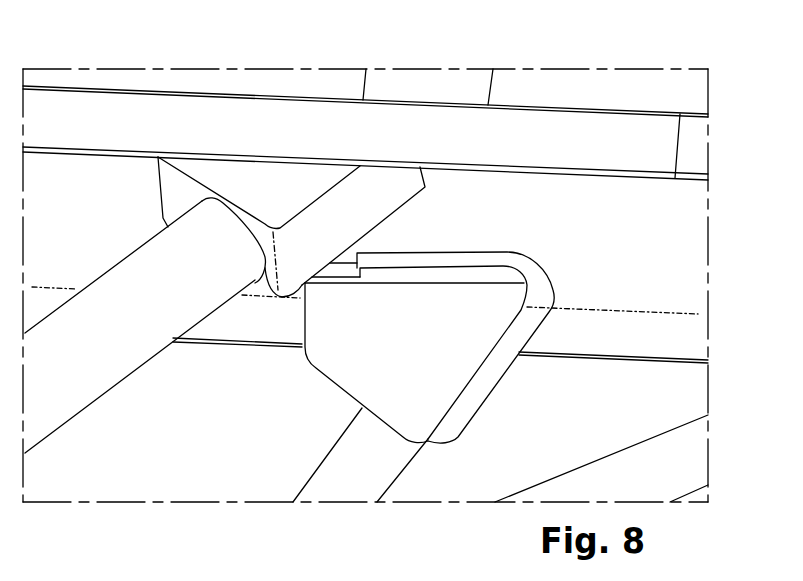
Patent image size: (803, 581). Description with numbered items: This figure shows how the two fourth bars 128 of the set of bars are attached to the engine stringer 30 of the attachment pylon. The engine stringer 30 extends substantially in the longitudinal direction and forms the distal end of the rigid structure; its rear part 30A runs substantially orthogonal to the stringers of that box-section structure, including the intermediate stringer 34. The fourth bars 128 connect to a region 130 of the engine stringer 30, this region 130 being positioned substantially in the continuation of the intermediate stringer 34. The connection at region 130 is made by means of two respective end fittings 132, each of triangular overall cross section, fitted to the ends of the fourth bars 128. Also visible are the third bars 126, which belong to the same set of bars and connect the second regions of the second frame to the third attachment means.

The intermediate stringer 34 is at (440, 85).
The engine stringer 30 is at (365, 103).
The rear part of the engine stringer 30A is at (573, 133).
The third bars 126 is at (683, 462).
The fourth bars 128 is at (338, 472).
The region of the engine stringer 130 is at (337, 125).
The end fittings 132 is at (257, 182).